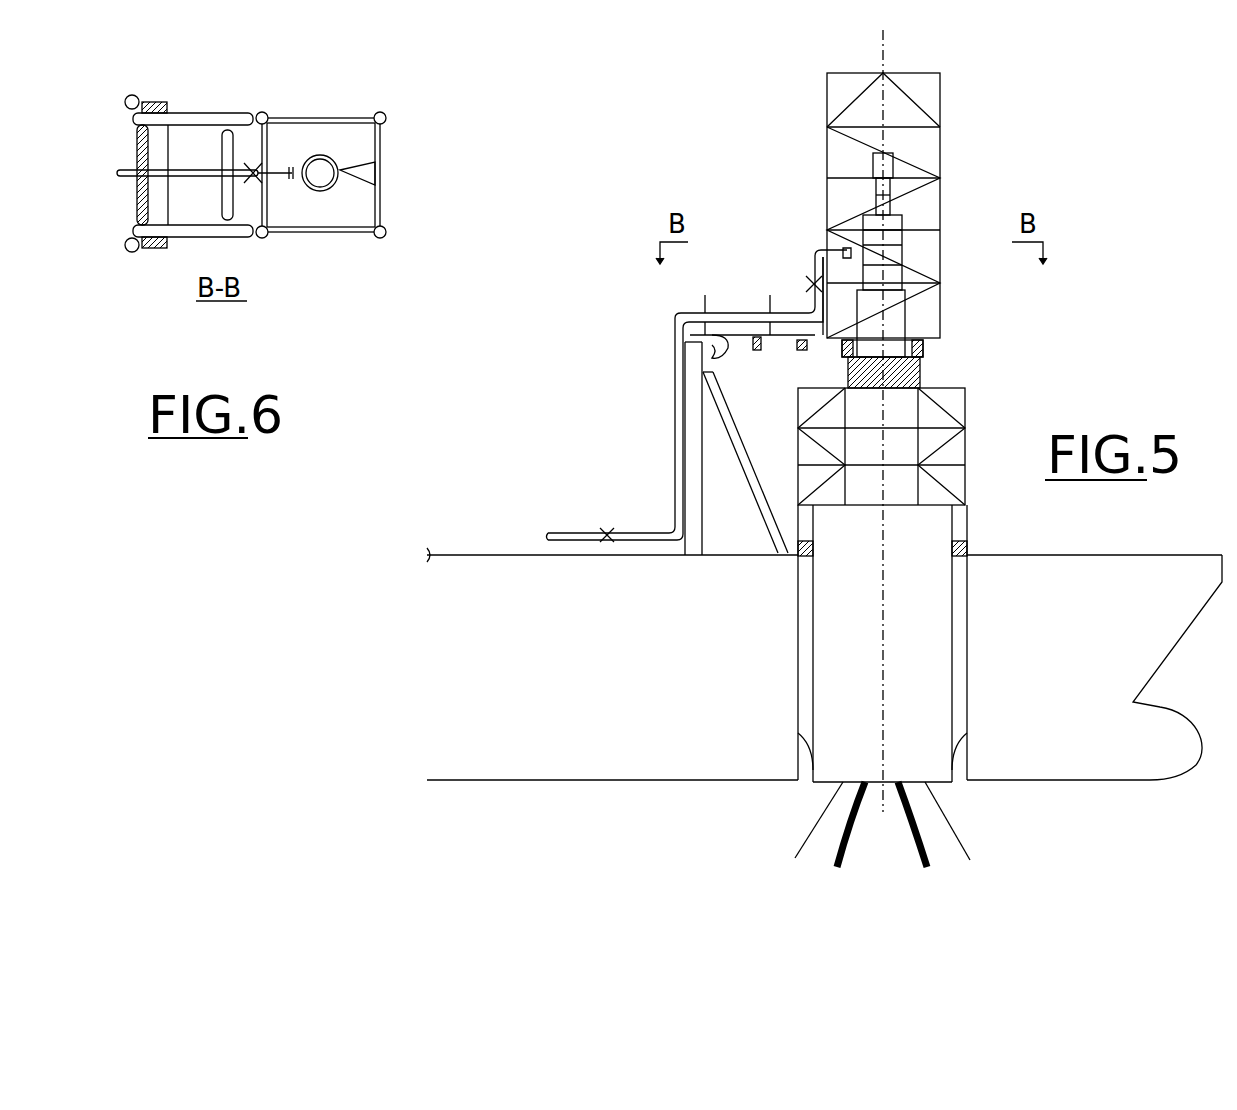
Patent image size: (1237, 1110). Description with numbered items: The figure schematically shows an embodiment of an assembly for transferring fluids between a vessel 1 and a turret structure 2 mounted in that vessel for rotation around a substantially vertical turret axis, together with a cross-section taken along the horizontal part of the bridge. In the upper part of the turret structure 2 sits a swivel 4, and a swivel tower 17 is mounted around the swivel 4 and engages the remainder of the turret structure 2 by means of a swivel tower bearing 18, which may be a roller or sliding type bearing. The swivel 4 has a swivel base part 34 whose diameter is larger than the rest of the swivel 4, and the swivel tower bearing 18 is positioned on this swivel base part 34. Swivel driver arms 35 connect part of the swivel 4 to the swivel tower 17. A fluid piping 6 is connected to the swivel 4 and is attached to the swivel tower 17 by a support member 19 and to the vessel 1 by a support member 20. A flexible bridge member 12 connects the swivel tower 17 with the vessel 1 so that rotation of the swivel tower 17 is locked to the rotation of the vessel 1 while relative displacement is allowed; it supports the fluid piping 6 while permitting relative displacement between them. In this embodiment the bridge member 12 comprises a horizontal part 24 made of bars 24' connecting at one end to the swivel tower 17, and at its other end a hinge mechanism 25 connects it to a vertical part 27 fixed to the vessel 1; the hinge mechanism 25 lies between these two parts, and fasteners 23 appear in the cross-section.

In FIG. 5, the vessel 1 is at (440, 553).
In FIG. 5, the turret structure 2 is at (967, 457).
In FIG. 5, the swivel 4 is at (905, 250).
In FIG. 6, the swivel 4 is at (318, 152).
In FIG. 5, the fluid piping 6 is at (673, 412).
In FIG. 6, the fluid piping 6 is at (192, 168).
In FIG. 5, the flexible bridge member 12 is at (757, 347).
In FIG. 5, the swivel tower 17 is at (827, 158).
In FIG. 6, the swivel tower 17 is at (385, 140).
In FIG. 5, the swivel tower bearing 18 is at (925, 350).
In FIG. 5, the support member 19 is at (810, 280).
In FIG. 5, the support member 20 is at (603, 533).
In FIG. 6, the fastening bolt 23 is at (125, 100).
In FIG. 5, the horizontal part 24 is at (806, 363).
In FIG. 6, the horizontal part 24 is at (109, 171).
In FIG. 6, the bars 24' is at (221, 160).
In FIG. 5, the hinge mechanism 25 is at (725, 308).
In FIG. 6, the hinge mechanism 25 is at (163, 147).
In FIG. 5, the vertical part 27 is at (696, 520).
In FIG. 5, the swivel base part 34 is at (920, 375).
In FIG. 6, the swivel driver arms 35 is at (360, 192).